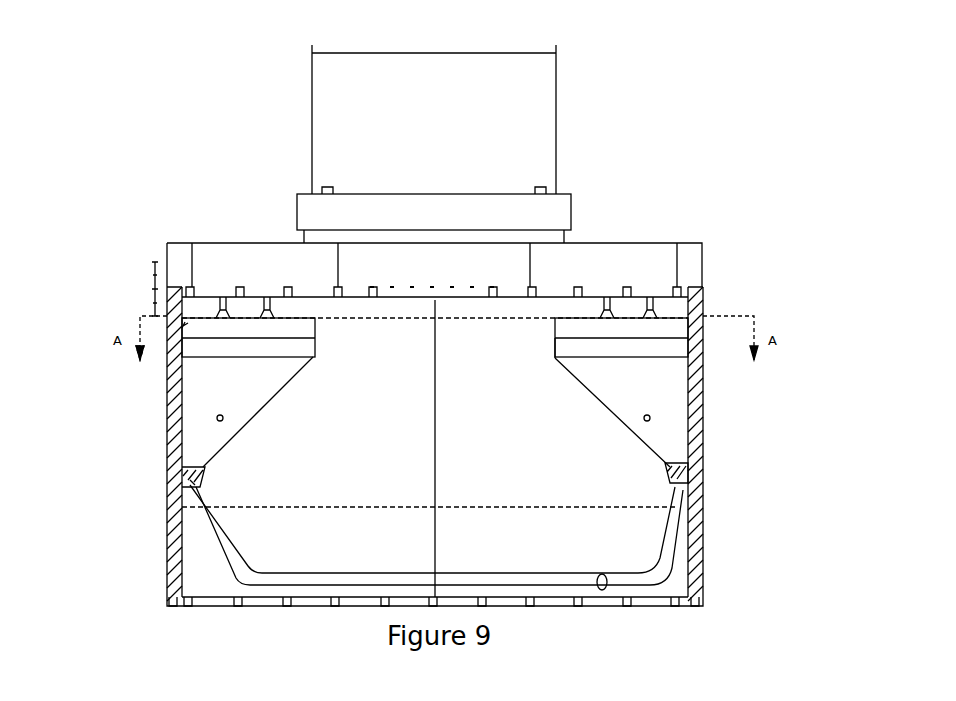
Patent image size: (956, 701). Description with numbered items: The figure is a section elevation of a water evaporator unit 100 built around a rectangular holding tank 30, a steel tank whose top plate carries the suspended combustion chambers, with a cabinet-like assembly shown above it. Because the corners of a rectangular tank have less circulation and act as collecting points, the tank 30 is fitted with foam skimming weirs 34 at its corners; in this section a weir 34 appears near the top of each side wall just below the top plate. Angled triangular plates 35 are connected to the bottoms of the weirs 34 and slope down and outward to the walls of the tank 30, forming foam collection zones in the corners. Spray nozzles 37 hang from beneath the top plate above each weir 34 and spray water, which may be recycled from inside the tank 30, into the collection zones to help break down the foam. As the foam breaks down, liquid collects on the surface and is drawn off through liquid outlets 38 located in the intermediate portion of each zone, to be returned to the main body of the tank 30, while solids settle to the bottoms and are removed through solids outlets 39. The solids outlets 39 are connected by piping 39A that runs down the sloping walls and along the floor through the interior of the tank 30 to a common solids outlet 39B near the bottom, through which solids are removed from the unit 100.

The rectangular holding tank 30 is at (183, 560).
The foam skimming weir 34 is at (285, 327).
The angled triangular plate 35 is at (268, 403).
The spray nozzle 37 is at (267, 297).
The liquid outlet 38 is at (217, 420).
The solids outlet 39 is at (190, 480).
The piping 39A is at (405, 573).
The common solids outlet 39B is at (603, 590).
The water evaporator unit 100 is at (206, 646).